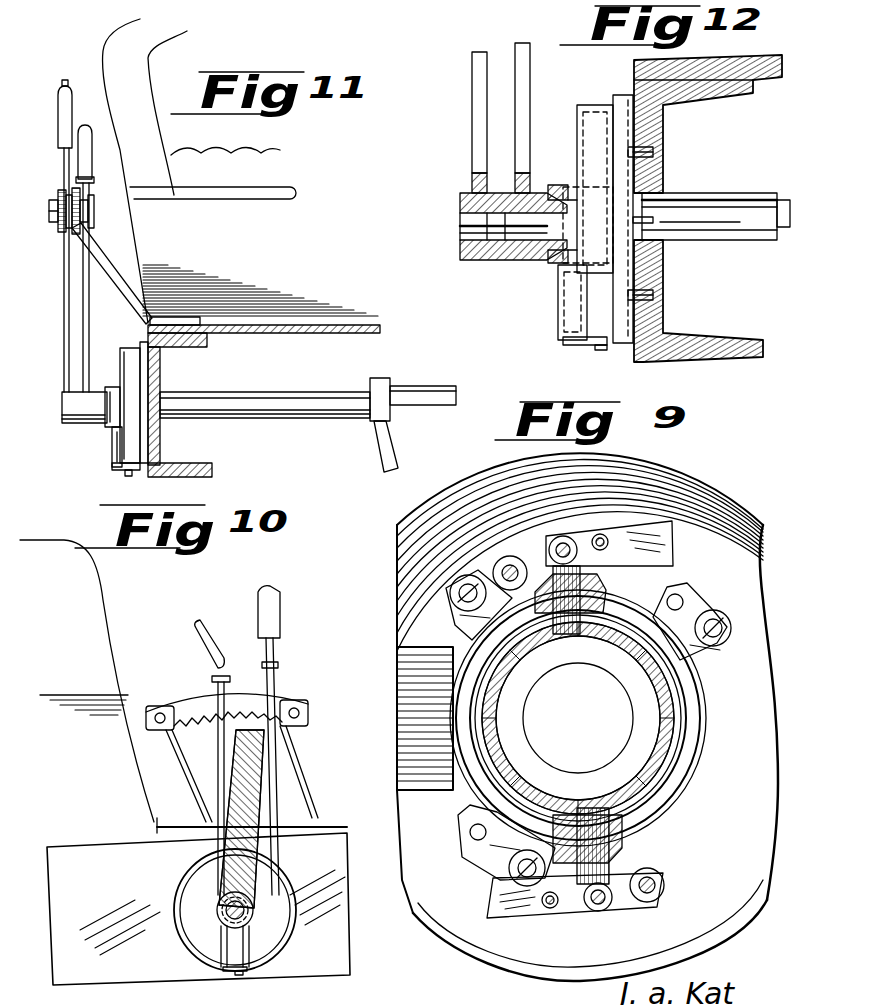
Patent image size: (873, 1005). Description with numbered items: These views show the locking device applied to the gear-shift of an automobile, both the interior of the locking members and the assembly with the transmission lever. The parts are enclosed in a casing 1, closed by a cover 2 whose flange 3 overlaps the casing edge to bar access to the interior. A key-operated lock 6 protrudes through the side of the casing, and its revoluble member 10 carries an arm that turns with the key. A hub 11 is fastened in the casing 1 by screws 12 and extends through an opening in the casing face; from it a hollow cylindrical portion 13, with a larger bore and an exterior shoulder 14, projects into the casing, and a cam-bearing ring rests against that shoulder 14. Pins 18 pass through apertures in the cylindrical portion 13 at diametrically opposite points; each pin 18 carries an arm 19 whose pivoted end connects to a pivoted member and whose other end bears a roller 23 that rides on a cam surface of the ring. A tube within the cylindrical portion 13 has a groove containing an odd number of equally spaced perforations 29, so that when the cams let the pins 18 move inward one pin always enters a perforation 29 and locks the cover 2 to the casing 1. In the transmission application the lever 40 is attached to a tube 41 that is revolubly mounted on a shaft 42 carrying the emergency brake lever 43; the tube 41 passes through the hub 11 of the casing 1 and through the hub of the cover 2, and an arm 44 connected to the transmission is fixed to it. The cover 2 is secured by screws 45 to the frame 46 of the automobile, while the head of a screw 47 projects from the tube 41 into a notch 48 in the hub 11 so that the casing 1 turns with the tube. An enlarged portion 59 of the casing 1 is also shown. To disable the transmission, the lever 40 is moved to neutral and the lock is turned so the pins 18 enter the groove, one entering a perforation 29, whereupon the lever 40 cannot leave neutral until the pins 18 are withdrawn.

In FIG. 11, the casing 1 is at (130, 405).
In FIG. 12, the casing 1 is at (588, 189).
In FIG. 9, the casing 1 is at (587, 717).
In FIG. 10, the casing 1 is at (244, 929).
In FIG. 11, the cover 2 is at (160, 376).
In FIG. 12, the cover 2 is at (655, 166).
In FIG. 11, the flange 3 is at (142, 345).
In FIG. 12, the flange 3 is at (622, 96).
In FIG. 10, the flange 3 is at (290, 885).
In FIG. 11, the lock 6 is at (120, 471).
In FIG. 12, the lock 6 is at (587, 347).
In FIG. 10, the lock 6 is at (230, 972).
In FIG. 11, the revoluble member 10 is at (130, 477).
In FIG. 12, the revoluble member 10 is at (601, 351).
In FIG. 10, the revoluble member 10 is at (239, 976).
In FIG. 11, the hub 11 is at (113, 388).
In FIG. 12, the hub 11 is at (558, 185).
In FIG. 10, the hub 11 is at (223, 920).
In FIG. 9, the screws 12 is at (462, 613).
In FIG. 9, the hollow cylindrical portion 13 is at (663, 790).
In FIG. 9, the shoulder 14 is at (703, 712).
In FIG. 9, the pins 18 is at (590, 591).
In FIG. 9, the arm 19 is at (556, 554).
In FIG. 9, the roller 23 is at (511, 558).
In FIG. 9, the perforations 29 is at (663, 695).
In FIG. 11, the lever 40 is at (92, 192).
In FIG. 12, the lever 40 is at (524, 88).
In FIG. 10, the lever 40 is at (222, 768).
In FIG. 11, the tube 41 is at (298, 393).
In FIG. 12, the tube 41 is at (728, 193).
In FIG. 11, the shaft 42 is at (437, 386).
In FIG. 12, the shaft 42 is at (782, 200).
In FIG. 10, the shaft 42 is at (226, 909).
In FIG. 11, the emergency brake lever 43 is at (64, 256).
In FIG. 12, the emergency brake lever 43 is at (484, 103).
In FIG. 10, the emergency brake lever 43 is at (250, 770).
In FIG. 11, the arm 44 is at (392, 456).
In FIG. 12, the screws 45 is at (657, 150).
In FIG. 11, the frame 46 is at (162, 448).
In FIG. 12, the frame 46 is at (665, 318).
In FIG. 10, the frame 46 is at (198, 901).
In FIG. 12, the screw 47 is at (545, 190).
In FIG. 12, the notch 48 is at (574, 186).
In FIG. 11, the enlarged portion 59 is at (112, 450).
In FIG. 12, the enlarged portion 59 is at (560, 298).